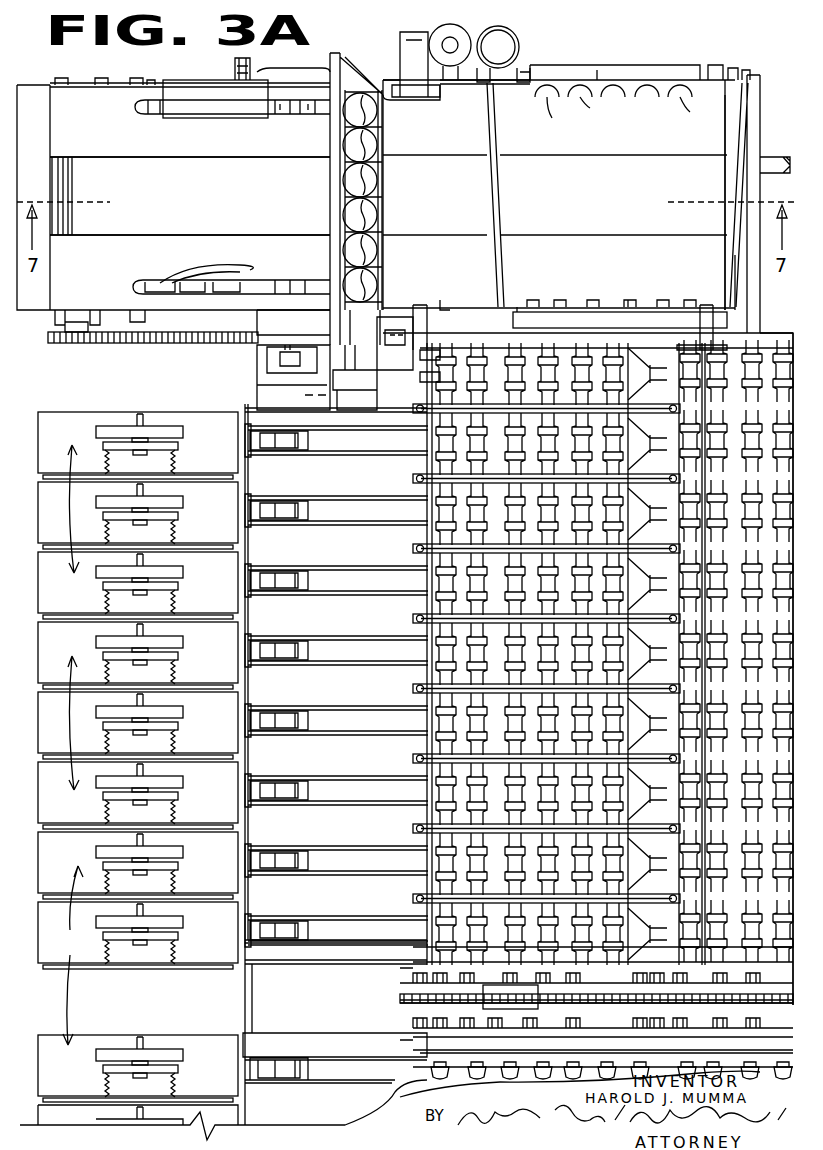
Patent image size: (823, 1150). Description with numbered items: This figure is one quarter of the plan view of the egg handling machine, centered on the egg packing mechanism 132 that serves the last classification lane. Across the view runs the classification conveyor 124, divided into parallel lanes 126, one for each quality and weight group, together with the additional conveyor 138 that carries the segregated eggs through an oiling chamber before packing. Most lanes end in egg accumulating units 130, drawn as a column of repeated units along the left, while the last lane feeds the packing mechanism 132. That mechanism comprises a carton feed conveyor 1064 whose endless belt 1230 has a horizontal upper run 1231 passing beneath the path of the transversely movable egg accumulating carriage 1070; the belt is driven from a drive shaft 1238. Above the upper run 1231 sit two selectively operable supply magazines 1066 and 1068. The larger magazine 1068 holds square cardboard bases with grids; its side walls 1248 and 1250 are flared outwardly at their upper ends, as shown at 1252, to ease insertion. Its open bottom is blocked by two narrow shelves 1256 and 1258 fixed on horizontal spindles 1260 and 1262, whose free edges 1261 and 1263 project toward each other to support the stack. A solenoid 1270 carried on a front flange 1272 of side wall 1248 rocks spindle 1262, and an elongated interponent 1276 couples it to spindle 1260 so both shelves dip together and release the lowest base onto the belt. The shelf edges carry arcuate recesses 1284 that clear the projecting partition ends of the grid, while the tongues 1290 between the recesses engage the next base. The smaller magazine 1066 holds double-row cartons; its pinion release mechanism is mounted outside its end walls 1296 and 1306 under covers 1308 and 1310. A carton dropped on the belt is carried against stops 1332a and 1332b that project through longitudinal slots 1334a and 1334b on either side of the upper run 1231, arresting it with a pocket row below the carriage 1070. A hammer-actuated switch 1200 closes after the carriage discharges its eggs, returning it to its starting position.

The classification conveyor 124 is at (778, 337).
The classification lanes 126 is at (440, 440).
The egg accumulating units 130 is at (138, 768).
The egg packing mechanism 132 is at (328, 193).
The oiling conveyor 138 is at (423, 943).
The carton feed conveyor 1064 is at (212, 201).
The carton supply magazine 1066 is at (455, 166).
The grid supply magazine 1068 is at (730, 125).
The egg accumulating carriage 1070 is at (330, 178).
The hammer-actuated switch 1200 is at (314, 323).
The endless belt 1230 is at (166, 226).
The upper run of endless belt 1231 is at (140, 172).
The drive shaft 1238 is at (72, 321).
The side wall of grid magazine 1248 is at (502, 183).
The side wall of grid magazine 1250 is at (728, 183).
The flared upper ends 1252 is at (733, 145).
The gate shelf 1256 is at (570, 327).
The gate shelf 1258 is at (597, 70).
The horizontal spindle 1260 is at (518, 308).
The free edge of shelf 1261 is at (628, 300).
The horizontal spindle 1262 is at (527, 64).
The free edge of shelf 1263 is at (620, 97).
The solenoid 1270 is at (512, 36).
The front flange 1272 is at (530, 76).
The interponent 1276 is at (736, 264).
The arcuate recesses 1284 is at (592, 90).
The tongues 1290 is at (576, 100).
The end wall of carton magazine 1296 is at (448, 92).
The end wall of carton magazine 1306 is at (450, 300).
The pinion cover 1308 is at (406, 50).
The pinion cover 1310 is at (436, 366).
The stop bar 1332a is at (240, 270).
The stop bar 1332b is at (160, 118).
The longitudinal slot 1334a is at (133, 285).
The longitudinal slot 1334b is at (135, 107).